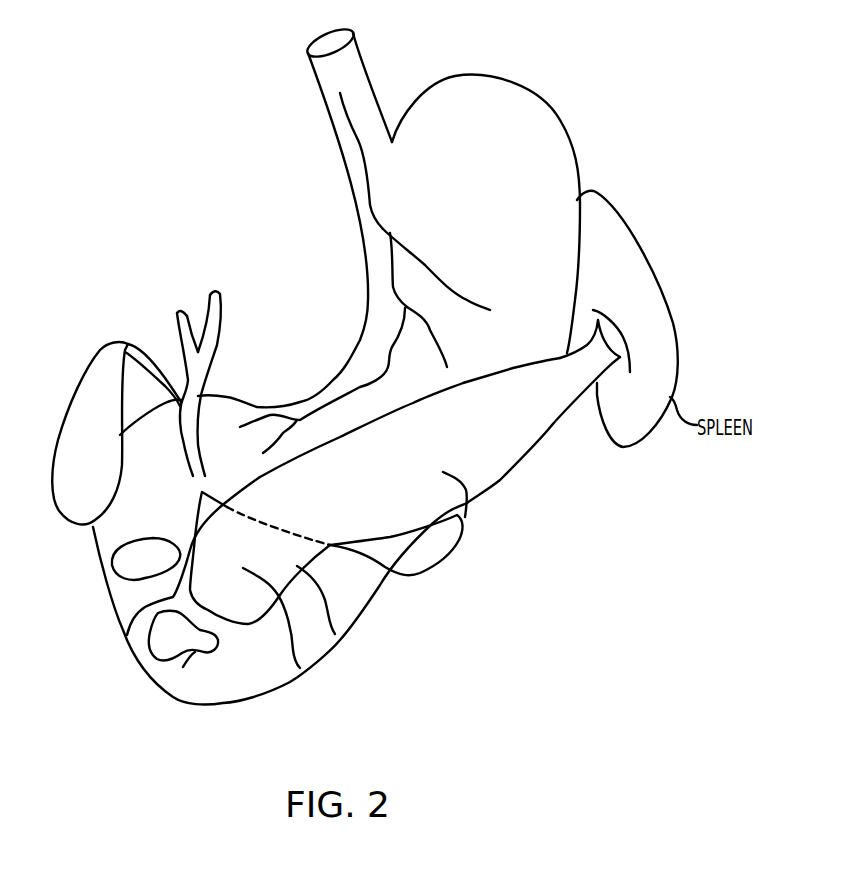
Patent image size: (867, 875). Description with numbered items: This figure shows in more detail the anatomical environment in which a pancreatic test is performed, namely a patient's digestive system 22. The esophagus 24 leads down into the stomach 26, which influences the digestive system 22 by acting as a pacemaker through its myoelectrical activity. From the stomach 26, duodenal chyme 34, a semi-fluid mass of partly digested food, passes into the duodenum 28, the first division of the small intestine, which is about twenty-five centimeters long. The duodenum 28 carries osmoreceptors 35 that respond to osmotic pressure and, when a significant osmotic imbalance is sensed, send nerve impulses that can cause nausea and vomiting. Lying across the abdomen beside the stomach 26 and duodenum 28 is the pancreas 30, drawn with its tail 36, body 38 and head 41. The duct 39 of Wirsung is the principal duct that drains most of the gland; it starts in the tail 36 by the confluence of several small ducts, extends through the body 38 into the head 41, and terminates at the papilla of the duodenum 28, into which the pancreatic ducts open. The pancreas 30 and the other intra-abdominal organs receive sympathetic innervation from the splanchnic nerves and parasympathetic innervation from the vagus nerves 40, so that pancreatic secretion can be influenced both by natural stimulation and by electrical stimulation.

The digestive system 22 is at (232, 237).
The esophagus 24 is at (364, 50).
The stomach 26 is at (540, 137).
The duodenum 28 is at (205, 665).
The pancreas 30 is at (490, 478).
The duodenal chyme 34 is at (160, 645).
The osmoreceptors 35 is at (183, 667).
The tail 36 is at (572, 393).
The body 38 is at (465, 517).
The duct of Wirsung 39 is at (300, 668).
The vagus nerves 40 is at (367, 177).
The head 41 is at (335, 634).